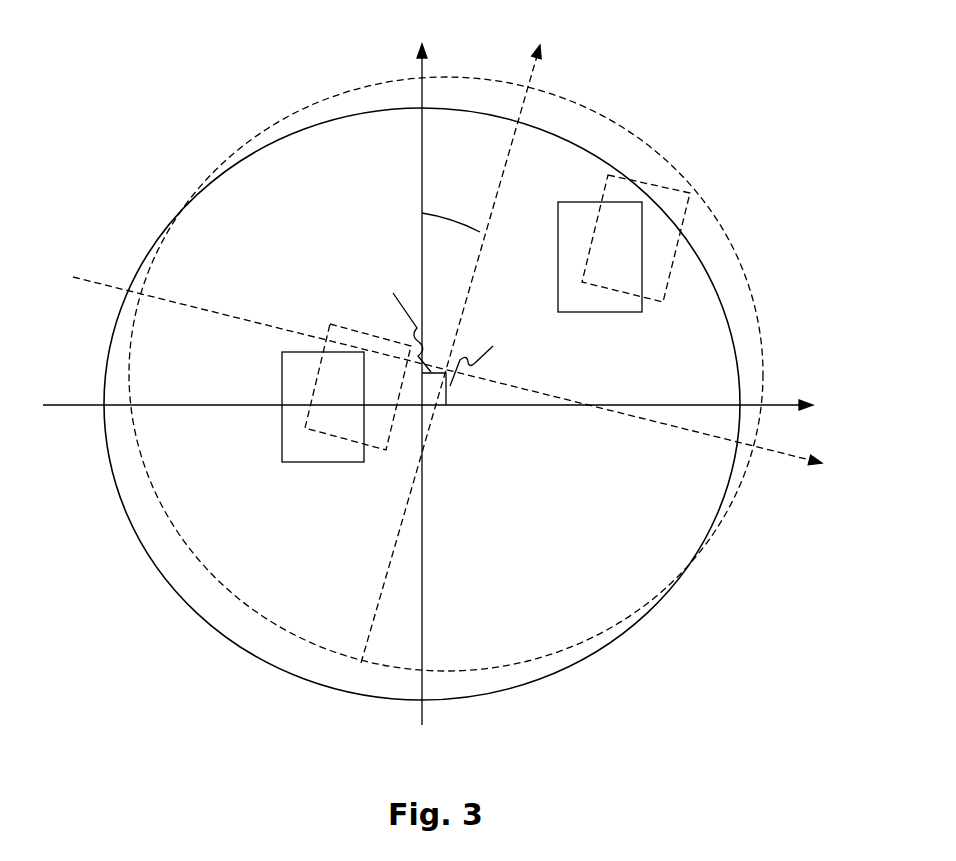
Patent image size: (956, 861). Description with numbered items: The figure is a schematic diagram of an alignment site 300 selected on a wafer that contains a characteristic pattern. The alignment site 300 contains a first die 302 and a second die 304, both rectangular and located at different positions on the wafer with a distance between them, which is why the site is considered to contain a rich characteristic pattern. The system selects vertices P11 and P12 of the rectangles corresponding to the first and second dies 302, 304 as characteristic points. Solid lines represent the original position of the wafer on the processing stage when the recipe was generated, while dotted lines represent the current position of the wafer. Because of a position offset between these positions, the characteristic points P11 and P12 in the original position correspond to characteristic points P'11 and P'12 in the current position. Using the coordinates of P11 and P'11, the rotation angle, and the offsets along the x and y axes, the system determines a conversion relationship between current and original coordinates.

The alignment site 300 is at (448, 25).
The first die 302 is at (282, 378).
The second die 304 is at (558, 250).
The characteristic point P11 is at (282, 462).
The characteristic point P'11 is at (358, 405).
The characteristic point P12 is at (558, 312).
The characteristic point P'12 is at (636, 259).